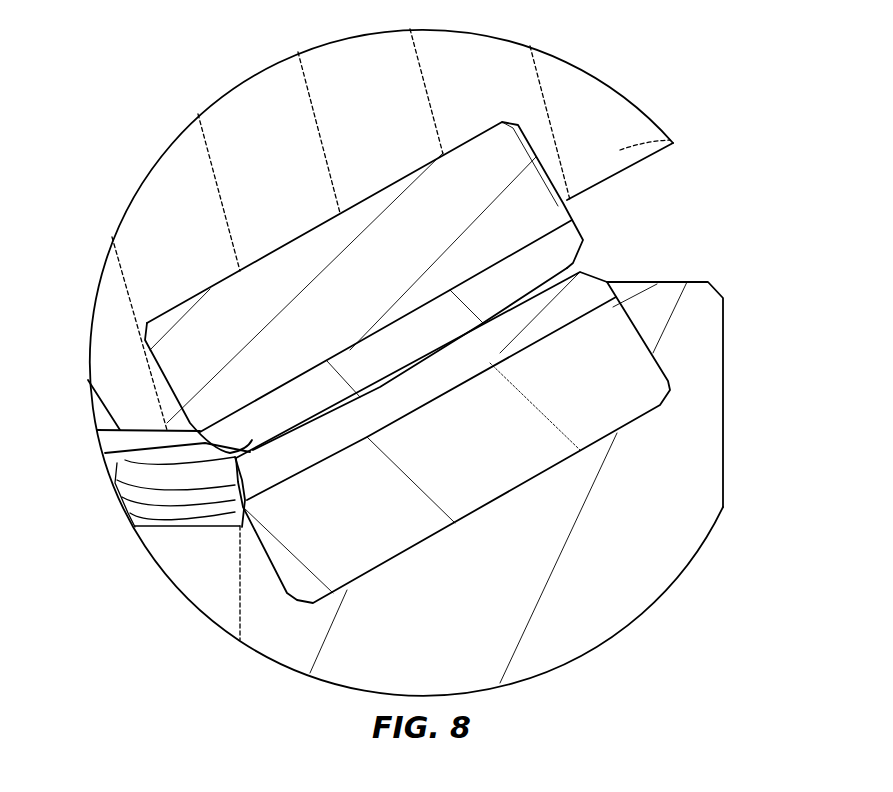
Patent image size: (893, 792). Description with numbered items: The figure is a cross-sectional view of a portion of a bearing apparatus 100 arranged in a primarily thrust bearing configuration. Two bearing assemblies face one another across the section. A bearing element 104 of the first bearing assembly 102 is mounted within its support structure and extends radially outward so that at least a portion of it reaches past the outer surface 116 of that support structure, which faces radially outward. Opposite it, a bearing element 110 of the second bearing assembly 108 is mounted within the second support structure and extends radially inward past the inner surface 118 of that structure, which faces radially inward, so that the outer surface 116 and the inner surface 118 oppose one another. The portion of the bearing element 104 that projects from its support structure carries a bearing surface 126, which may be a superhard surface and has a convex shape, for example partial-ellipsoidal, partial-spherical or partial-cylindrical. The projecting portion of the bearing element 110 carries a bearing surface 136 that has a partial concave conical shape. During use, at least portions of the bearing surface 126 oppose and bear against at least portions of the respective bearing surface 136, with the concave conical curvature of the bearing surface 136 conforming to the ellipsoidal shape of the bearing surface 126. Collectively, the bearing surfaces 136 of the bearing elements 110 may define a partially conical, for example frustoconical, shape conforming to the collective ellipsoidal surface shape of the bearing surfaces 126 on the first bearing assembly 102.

The bearing apparatus 100 is at (660, 86).
The first bearing assembly 102 is at (247, 130).
The bearing element 104 is at (583, 252).
The second bearing assembly 108 is at (572, 640).
The bearing element 110 is at (585, 270).
The outer surface 116 is at (668, 137).
The inner surface 118 is at (690, 310).
The bearing surface 126 is at (247, 440).
The bearing surface 136 is at (243, 507).